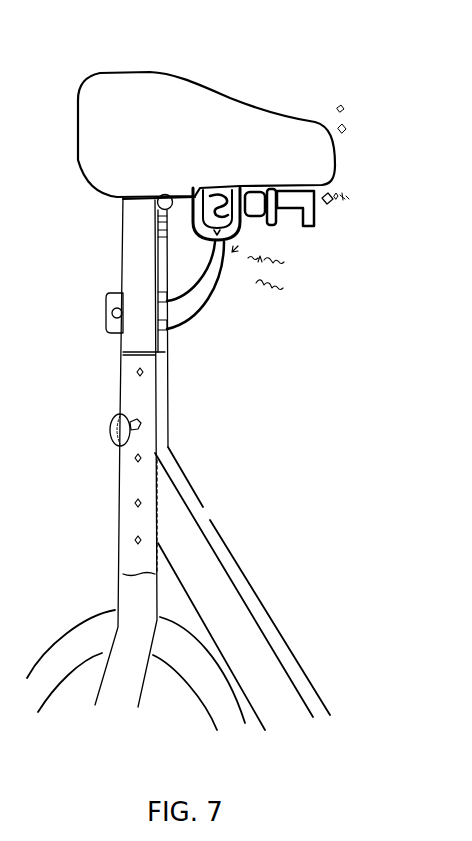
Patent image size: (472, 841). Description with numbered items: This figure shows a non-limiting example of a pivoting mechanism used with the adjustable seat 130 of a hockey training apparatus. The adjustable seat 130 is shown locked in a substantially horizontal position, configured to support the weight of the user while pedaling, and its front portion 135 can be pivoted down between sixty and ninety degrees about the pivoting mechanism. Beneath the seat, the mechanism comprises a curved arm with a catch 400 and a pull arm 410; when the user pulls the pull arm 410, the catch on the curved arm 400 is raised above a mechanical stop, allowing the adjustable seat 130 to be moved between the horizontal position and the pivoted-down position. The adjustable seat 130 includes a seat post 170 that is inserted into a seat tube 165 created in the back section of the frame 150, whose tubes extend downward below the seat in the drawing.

The adjustable seat 130 is at (133, 84).
The front portion 135 is at (303, 136).
The frame 150 is at (236, 609).
The seat tube 165 is at (121, 402).
The seat post 170 is at (122, 254).
The curved arm with a catch 400 is at (212, 302).
The pull arm 410 is at (330, 224).